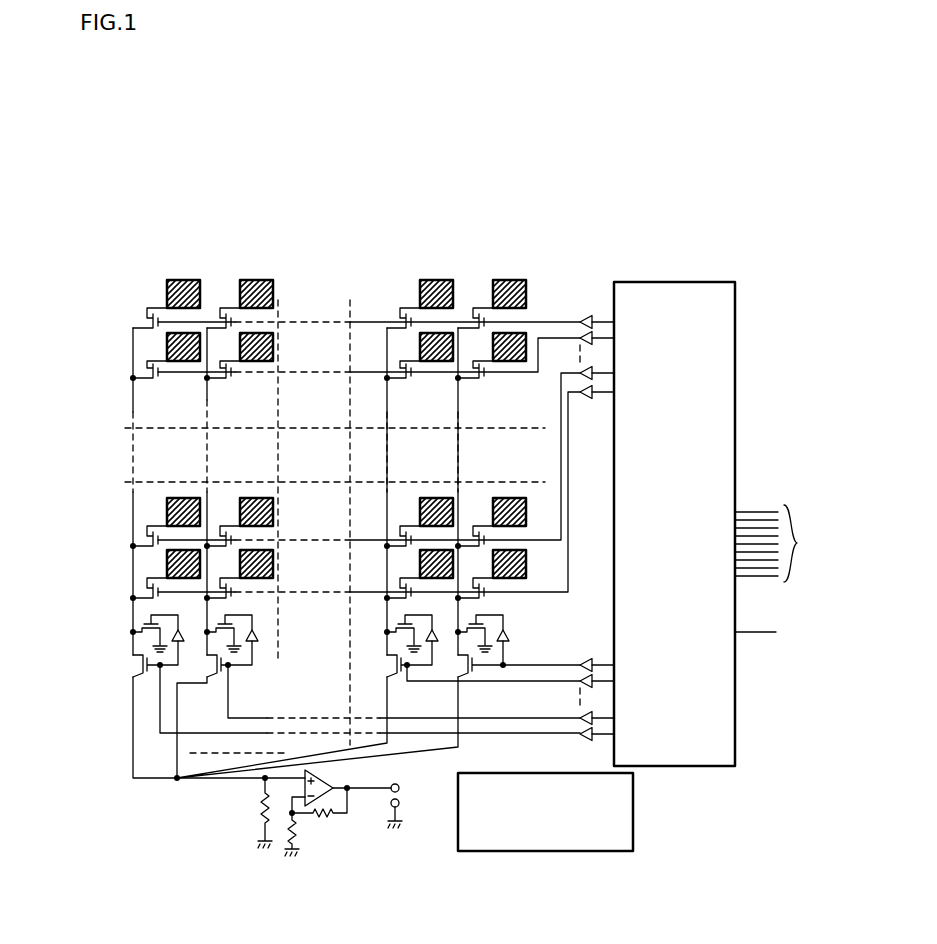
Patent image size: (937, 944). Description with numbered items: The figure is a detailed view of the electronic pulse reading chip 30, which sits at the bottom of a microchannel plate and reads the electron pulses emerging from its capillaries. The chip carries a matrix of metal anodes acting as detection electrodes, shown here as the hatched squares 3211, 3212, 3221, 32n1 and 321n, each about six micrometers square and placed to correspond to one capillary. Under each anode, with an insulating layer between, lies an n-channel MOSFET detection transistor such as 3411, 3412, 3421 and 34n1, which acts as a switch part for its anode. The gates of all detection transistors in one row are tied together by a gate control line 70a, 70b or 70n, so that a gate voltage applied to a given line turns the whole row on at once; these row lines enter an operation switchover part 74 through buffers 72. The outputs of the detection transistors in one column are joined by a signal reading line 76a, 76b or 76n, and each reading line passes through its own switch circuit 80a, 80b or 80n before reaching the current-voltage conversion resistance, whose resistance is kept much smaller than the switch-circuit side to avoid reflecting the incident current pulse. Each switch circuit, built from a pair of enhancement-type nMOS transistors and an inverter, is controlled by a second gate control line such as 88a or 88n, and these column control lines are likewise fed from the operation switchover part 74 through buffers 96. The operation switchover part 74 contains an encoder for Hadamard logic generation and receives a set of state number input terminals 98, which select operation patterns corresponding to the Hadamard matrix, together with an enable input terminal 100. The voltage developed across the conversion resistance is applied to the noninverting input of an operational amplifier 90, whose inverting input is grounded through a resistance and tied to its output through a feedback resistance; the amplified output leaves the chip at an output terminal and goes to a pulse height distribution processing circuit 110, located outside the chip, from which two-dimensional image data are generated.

The electronic pulse reading chip 30 is at (68, 288).
The anode 3211 is at (185, 279).
The detection transistor 3411 is at (147, 317).
The anode 3212 is at (273, 291).
The detection transistor 3412 is at (222, 302).
The anode 3221 is at (136, 346).
The detection transistor 3421 is at (136, 385).
The anode 321n is at (508, 279).
The detection transistor 34n1 is at (470, 304).
The anode 32n1 is at (165, 557).
The gate control line 70a is at (541, 320).
The gate control line 70b is at (505, 374).
The gate control line 70n is at (574, 496).
The buffer 72 is at (589, 310).
The operation switchover part 74 is at (735, 345).
The state number input terminals 98 is at (790, 543).
The enable input terminal 100 is at (776, 632).
The buffer 96 is at (597, 661).
The switch circuit 80a is at (133, 656).
The switch circuit 80b is at (256, 663).
The switch circuit 80n is at (511, 637).
The second gate control line 88n is at (522, 666).
The second gate control line 88a is at (510, 735).
The signal reading line 76a is at (131, 712).
The signal reading line 76b is at (176, 781).
The signal reading line 76n is at (460, 698).
The operational amplifier 90 is at (334, 804).
The pulse height distribution processing circuit 110 is at (635, 813).